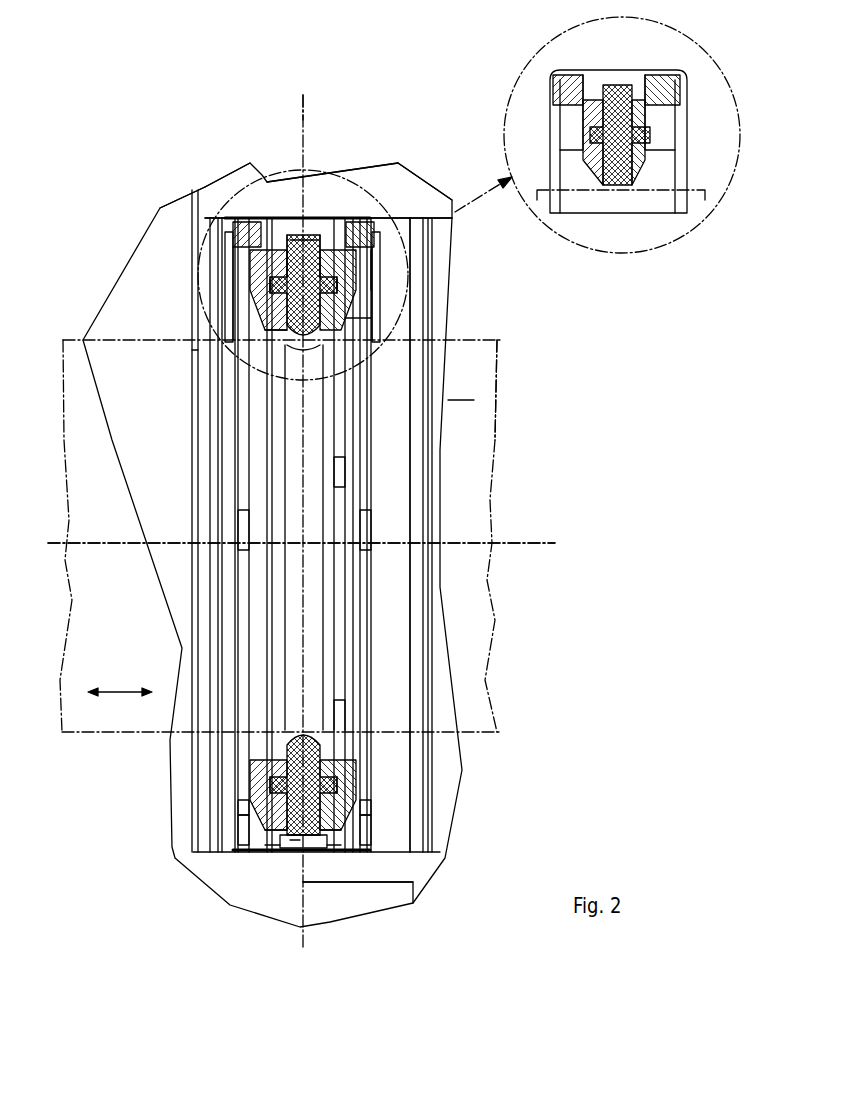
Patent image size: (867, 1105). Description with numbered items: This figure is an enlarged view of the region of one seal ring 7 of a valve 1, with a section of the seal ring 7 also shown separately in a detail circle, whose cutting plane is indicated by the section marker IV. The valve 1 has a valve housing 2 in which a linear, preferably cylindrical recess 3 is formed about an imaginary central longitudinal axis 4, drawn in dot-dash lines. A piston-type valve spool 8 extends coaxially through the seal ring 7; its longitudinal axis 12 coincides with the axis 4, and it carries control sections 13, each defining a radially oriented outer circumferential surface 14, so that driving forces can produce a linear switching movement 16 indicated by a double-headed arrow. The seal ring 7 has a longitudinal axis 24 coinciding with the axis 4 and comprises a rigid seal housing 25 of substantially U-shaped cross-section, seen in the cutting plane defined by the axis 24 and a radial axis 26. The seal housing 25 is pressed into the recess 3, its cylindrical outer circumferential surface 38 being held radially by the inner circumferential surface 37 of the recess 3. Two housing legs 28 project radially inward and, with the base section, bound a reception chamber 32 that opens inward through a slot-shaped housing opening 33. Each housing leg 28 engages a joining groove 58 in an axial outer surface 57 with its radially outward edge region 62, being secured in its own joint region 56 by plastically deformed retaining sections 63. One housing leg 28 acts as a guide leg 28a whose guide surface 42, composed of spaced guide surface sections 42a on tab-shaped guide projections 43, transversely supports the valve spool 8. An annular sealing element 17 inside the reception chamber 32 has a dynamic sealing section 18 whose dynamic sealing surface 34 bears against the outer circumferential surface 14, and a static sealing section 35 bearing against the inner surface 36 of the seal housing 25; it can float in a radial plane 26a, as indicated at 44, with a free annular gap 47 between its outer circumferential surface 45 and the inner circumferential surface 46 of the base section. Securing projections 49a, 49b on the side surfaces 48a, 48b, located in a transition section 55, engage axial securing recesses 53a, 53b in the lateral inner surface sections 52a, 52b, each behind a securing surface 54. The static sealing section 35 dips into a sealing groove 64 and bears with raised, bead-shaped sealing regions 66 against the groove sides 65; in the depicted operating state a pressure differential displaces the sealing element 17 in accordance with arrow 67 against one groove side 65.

The valve 1 is at (398, 135).
The valve housing 2 is at (237, 212).
The recess 3 is at (88, 338).
The central longitudinal axis 4 is at (332, 505).
The seal ring 7 is at (227, 207).
The valve spool 8 is at (599, 367).
The longitudinal axis 12 is at (332, 505).
The control section 13 is at (483, 598).
The outer circumferential surface 14 is at (190, 356).
The switching movement 16 is at (123, 690).
The sealing element 17 is at (347, 307).
The dynamic sealing section 18 is at (265, 383).
The longitudinal axis 24 is at (563, 543).
The seal housing 25 is at (375, 846).
The radial axis 26 is at (327, 77).
The radial plane 26a is at (306, 95).
The housing leg 28 is at (426, 248).
The guide leg 28a is at (262, 290).
The reception chamber 32 is at (370, 320).
The housing opening 33 is at (290, 360).
The dynamic sealing surface 34 is at (345, 690).
The static sealing section 35 is at (308, 270).
The inner surface 36 is at (375, 262).
The inner circumferential surface 37 is at (392, 212).
The outer circumferential surface 38 is at (268, 210).
The guide surface 42 is at (461, 535).
The guide surface section 42a is at (395, 368).
The guide projection 43 is at (345, 487).
The radial floating capability 44 is at (345, 285).
The outer circumferential surface 45 is at (300, 850).
The inner circumferential surface 46 is at (313, 843).
The free annular gap 47 is at (297, 843).
The side surface 48a is at (280, 768).
The side surface 48b is at (340, 785).
The securing projection 49a is at (275, 790).
The securing projection 49b is at (345, 800).
The lateral inner surface section 52a is at (278, 843).
The lateral inner surface section 52b is at (330, 840).
The axial securing recess 53a is at (265, 800).
The axial securing recess 53b is at (355, 812).
The securing surface 54 is at (278, 300).
The transition section 55 is at (302, 730).
The joint region 56 is at (268, 248).
The axial outer surface 57 is at (232, 245).
The joining groove 58 is at (262, 822).
The radially outward edge region 62 is at (235, 273).
The retaining section 63 is at (240, 530).
The sealing groove 64 is at (300, 262).
The groove side 65 is at (633, 100).
The raised sealing region 66 is at (568, 110).
The arrow 67 is at (616, 97).
The section view marker IV is at (400, 393).